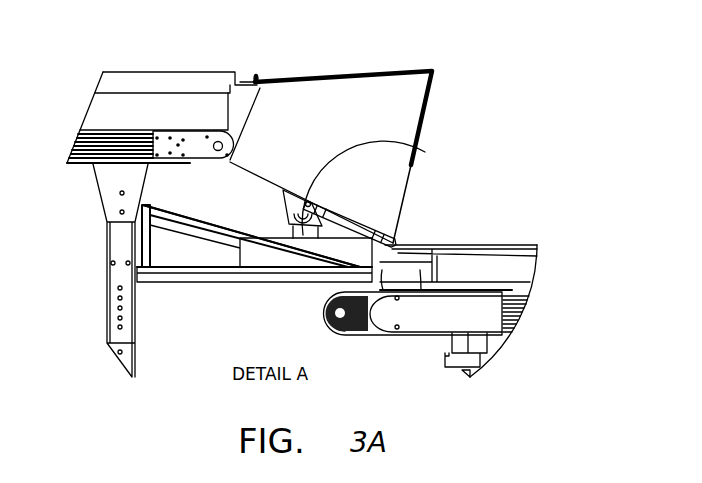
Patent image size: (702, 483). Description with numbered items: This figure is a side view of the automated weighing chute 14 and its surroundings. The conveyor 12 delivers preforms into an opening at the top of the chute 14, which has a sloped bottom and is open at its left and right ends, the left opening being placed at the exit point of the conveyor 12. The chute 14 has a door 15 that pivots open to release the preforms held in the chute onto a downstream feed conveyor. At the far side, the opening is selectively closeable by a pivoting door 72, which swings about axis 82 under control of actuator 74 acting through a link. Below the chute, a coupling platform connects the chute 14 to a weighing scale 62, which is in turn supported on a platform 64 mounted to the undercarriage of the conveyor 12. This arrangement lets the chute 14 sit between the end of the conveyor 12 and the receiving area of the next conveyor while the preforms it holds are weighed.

The conveyor 12 is at (116, 76).
The automated weighing chute 14 is at (363, 93).
The door 15 is at (403, 168).
The weighing scale 62 is at (258, 258).
The platform 64 is at (273, 274).
The pivoting door 72 is at (408, 176).
The actuator 74 is at (337, 212).
The axis 82 is at (393, 243).